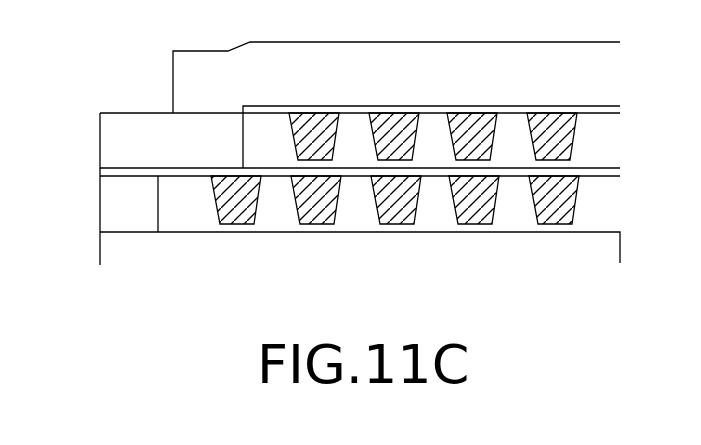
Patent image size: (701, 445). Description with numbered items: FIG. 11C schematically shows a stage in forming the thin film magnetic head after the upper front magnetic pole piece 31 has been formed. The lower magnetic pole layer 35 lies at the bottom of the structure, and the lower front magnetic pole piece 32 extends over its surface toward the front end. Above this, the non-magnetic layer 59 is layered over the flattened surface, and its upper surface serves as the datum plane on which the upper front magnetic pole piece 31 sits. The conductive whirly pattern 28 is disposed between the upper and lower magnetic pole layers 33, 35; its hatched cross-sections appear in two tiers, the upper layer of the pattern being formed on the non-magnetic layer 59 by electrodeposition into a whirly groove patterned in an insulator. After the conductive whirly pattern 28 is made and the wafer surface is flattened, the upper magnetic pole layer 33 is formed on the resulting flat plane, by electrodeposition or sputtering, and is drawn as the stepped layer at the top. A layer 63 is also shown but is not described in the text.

The upper magnetic pole layer 33 is at (182, 86).
The thin film layer 63 is at (357, 112).
The upper front magnetic pole piece 31 is at (100, 128).
The non-magnetic layer 59 is at (100, 170).
The lower front magnetic pole piece 32 is at (100, 212).
The lower magnetic pole layer 35 is at (100, 244).
The conductive whirly pattern 28 is at (576, 142).